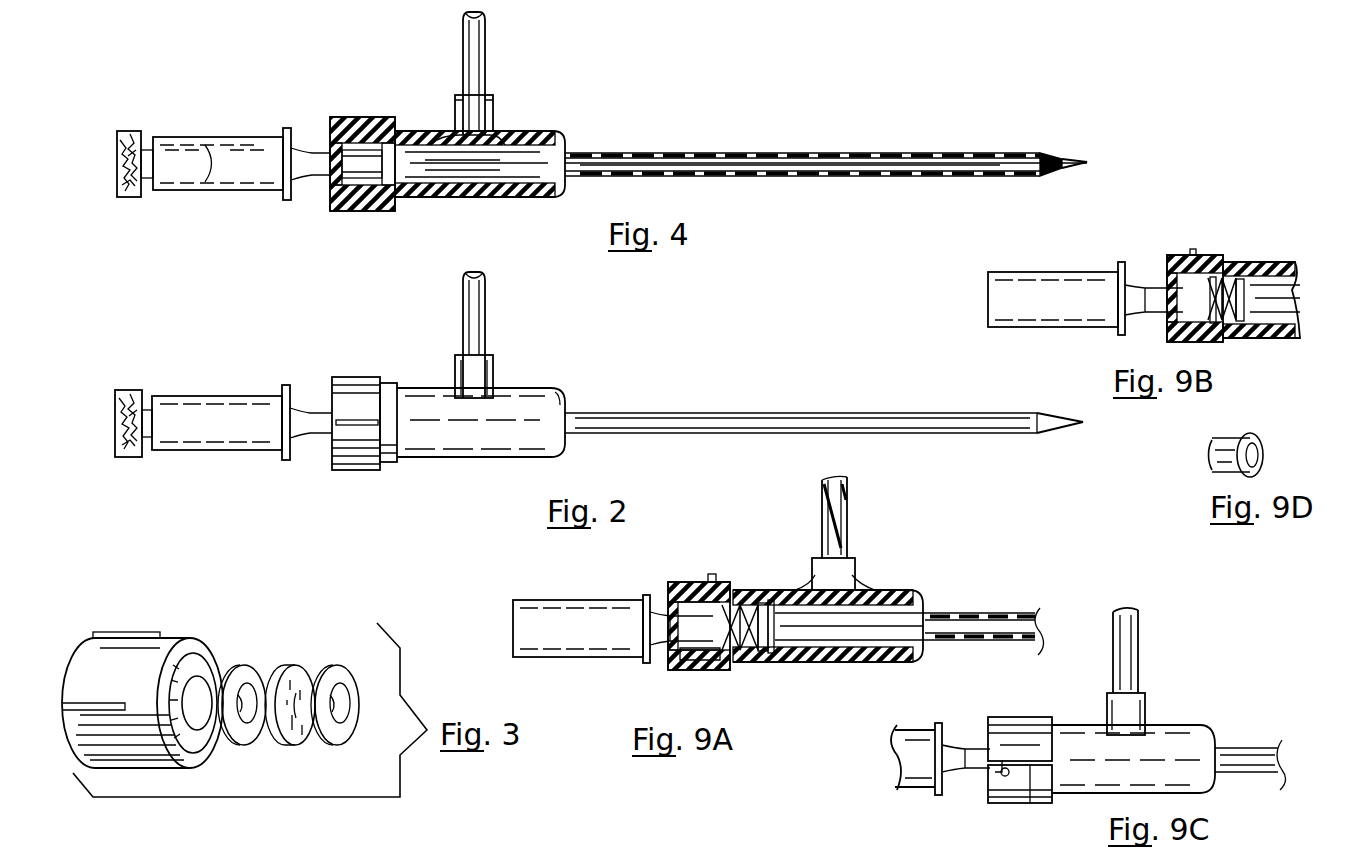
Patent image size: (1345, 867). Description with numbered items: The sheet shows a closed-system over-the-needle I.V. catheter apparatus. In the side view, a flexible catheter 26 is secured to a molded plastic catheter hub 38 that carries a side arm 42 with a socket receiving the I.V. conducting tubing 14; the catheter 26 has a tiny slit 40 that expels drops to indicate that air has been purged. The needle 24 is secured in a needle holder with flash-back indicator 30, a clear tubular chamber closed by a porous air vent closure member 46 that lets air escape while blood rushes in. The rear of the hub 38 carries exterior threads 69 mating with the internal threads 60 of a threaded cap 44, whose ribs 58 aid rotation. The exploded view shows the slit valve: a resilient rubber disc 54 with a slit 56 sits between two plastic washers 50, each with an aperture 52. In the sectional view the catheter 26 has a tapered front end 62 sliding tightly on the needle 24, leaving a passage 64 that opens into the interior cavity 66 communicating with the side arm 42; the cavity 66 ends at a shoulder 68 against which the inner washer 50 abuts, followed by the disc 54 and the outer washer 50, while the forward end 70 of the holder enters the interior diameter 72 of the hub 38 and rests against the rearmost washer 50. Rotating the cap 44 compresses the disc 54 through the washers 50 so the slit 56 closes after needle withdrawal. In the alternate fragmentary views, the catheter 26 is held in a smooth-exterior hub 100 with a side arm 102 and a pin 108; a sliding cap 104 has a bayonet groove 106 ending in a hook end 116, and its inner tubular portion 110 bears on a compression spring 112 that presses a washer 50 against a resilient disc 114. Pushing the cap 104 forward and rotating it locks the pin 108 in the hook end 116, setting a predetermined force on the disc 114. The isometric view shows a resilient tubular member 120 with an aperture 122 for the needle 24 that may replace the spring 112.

In FIG. 4, the I.V. conducting tubing 14 is at (466, 30).
In FIG. 2, the I.V. conducting tubing 14 is at (468, 313).
In FIG. 9A, the I.V. conducting tubing 14 is at (822, 520).
In FIG. 9C, the I.V. conducting tubing 14 is at (1118, 642).
In FIG. 4, the needle 24 is at (1080, 160).
In FIG. 2, the needle 24 is at (1070, 420).
In FIG. 9A, the needle 24 is at (848, 641).
In FIG. 4, the catheter 26 is at (824, 152).
In FIG. 2, the catheter 26 is at (888, 412).
In FIG. 9A, the catheter 26 is at (970, 612).
In FIG. 9C, the catheter 26 is at (1245, 748).
In FIG. 4, the needle holder with flash-back indicator 30 is at (218, 152).
In FIG. 2, the needle holder with flash-back indicator 30 is at (200, 410).
In FIG. 9A, the needle holder with flash-back indicator 30 is at (573, 610).
In FIG. 9B, the needle holder with flash-back indicator 30 is at (1038, 285).
In FIG. 9C, the needle holder with flash-back indicator 30 is at (918, 740).
In FIG. 4, the catheter hub 38 is at (527, 206).
In FIG. 2, the catheter hub 38 is at (489, 467).
In FIG. 2, the slit 40 is at (1040, 433).
In FIG. 4, the side arm 42 is at (493, 110).
In FIG. 2, the side arm 42 is at (493, 365).
In FIG. 2, the threaded cap 44 is at (388, 470).
In FIG. 3, the threaded cap 44 is at (85, 668).
In FIG. 4, the air vent closure member 46 is at (128, 131).
In FIG. 2, the air vent closure member 46 is at (122, 392).
In FIG. 3, the washer 50 is at (240, 668).
In FIG. 9A, the washer 50 is at (771, 653).
In FIG. 9B, the washer 50 is at (1213, 277).
In FIG. 3, the aperture 52 is at (245, 720).
In FIG. 3, the resilient rubber disc 54 is at (295, 643).
In FIG. 3, the slit 56 is at (296, 718).
In FIG. 2, the ribs 58 is at (350, 420).
In FIG. 3, the ribs 58 is at (128, 633).
In FIG. 3, the internal threads 60 is at (203, 655).
In FIG. 4, the tapered front end 62 is at (1030, 152).
In FIG. 4, the passage 64 is at (938, 170).
In FIG. 4, the interior cavity 66 is at (448, 145).
In FIG. 4, the shoulder 68 is at (428, 183).
In FIG. 4, the exterior threads 69 is at (392, 130).
In FIG. 4, the forward end of the needle holder 70 is at (375, 178).
In FIG. 4, the interior diameter 72 is at (352, 211).
In FIG. 9A, the catheter hub 100 is at (880, 590).
In FIG. 9B, the catheter hub 100 is at (1261, 300).
In FIG. 9C, the catheter hub 100 is at (1182, 735).
In FIG. 9A, the side arm 102 is at (812, 575).
In FIG. 9C, the side arm 102 is at (1115, 710).
In FIG. 9A, the cap 104 is at (672, 590).
In FIG. 9B, the cap 104 is at (1165, 327).
In FIG. 9C, the cap 104 is at (1010, 730).
In FIG. 9A, the bayonet groove 106 is at (690, 582).
In FIG. 9C, the bayonet groove 106 is at (1032, 803).
In FIG. 9A, the pin 108 is at (712, 574).
In FIG. 9B, the pin 108 is at (1192, 249).
In FIG. 9C, the pin 108 is at (1001, 774).
In FIG. 9A, the inner tubular portion 110 is at (690, 670).
In FIG. 9A, the compression spring 112 is at (745, 652).
In FIG. 9B, the compression spring 112 is at (1228, 322).
In FIG. 9A, the resilient disc 114 is at (760, 603).
In FIG. 9B, the resilient disc 114 is at (1240, 279).
In FIG. 9C, the hook end 116 is at (1002, 760).
In FIG. 9D, the resilient tubular member 120 is at (1248, 432).
In FIG. 9D, the aperture 122 is at (1258, 460).